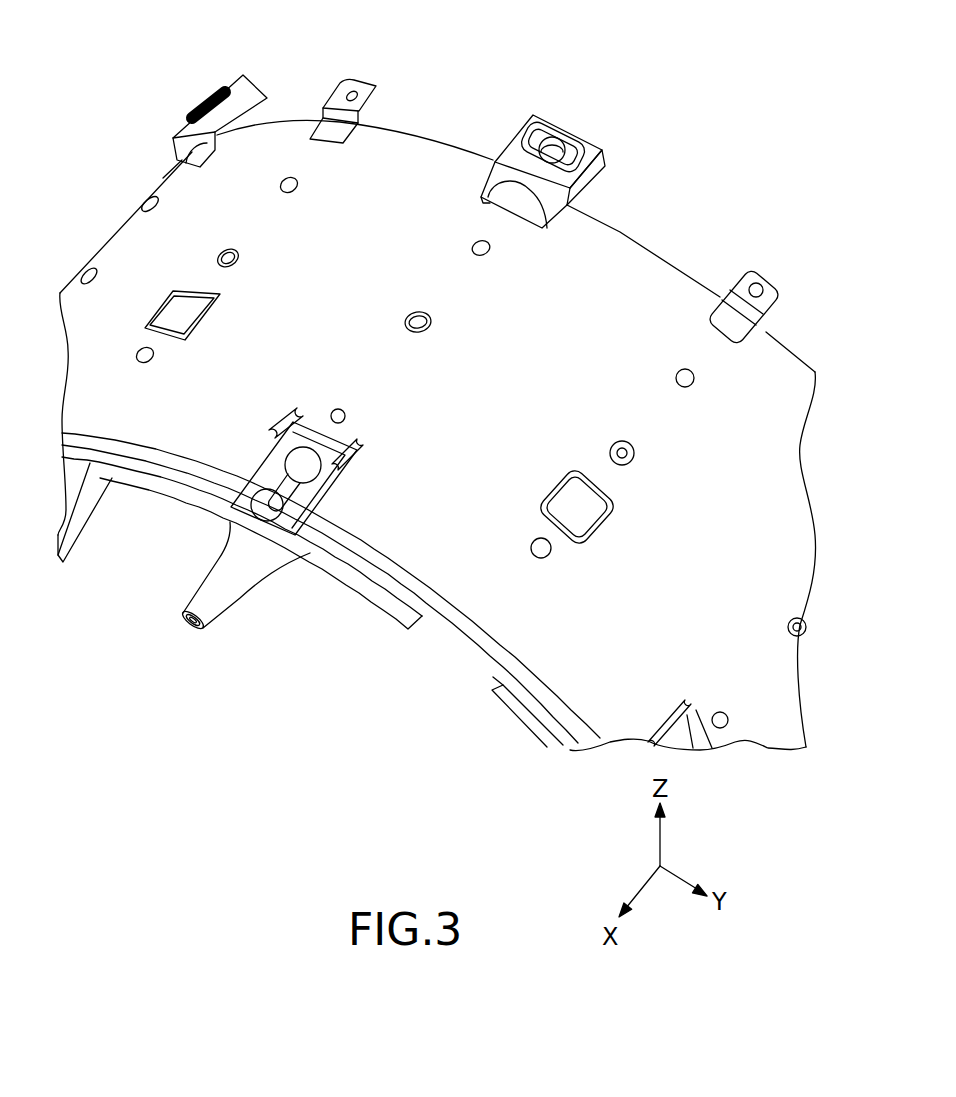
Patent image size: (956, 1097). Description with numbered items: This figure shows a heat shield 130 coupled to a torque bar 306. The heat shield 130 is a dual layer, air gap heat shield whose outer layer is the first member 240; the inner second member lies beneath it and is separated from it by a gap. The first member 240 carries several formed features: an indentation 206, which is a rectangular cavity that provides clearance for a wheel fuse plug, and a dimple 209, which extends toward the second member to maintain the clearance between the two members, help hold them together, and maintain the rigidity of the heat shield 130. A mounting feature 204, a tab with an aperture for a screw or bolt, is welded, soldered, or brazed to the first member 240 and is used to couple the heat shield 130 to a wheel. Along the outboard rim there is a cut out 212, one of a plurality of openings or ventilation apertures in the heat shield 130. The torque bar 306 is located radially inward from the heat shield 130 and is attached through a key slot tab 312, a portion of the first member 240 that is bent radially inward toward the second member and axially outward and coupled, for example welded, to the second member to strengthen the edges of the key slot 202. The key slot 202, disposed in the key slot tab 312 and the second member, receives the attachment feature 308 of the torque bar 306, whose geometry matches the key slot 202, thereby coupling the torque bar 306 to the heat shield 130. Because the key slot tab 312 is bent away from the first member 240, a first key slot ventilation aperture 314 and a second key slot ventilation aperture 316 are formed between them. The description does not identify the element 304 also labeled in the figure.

The heat shield 130 is at (636, 265).
The first member 240 is at (362, 172).
The clamp block 304 is at (589, 121).
The torque bar 306 is at (519, 137).
The mounting feature 204 is at (752, 278).
The cut out 212 is at (445, 661).
The key slot tab 312 is at (264, 483).
The key slot 202 is at (320, 483).
The first key slot ventilation aperture 314 is at (276, 448).
The second key slot ventilation aperture 316 is at (334, 454).
The attachment feature 308 is at (268, 512).
The dimple 209 is at (621, 452).
The indentation 206 is at (590, 508).